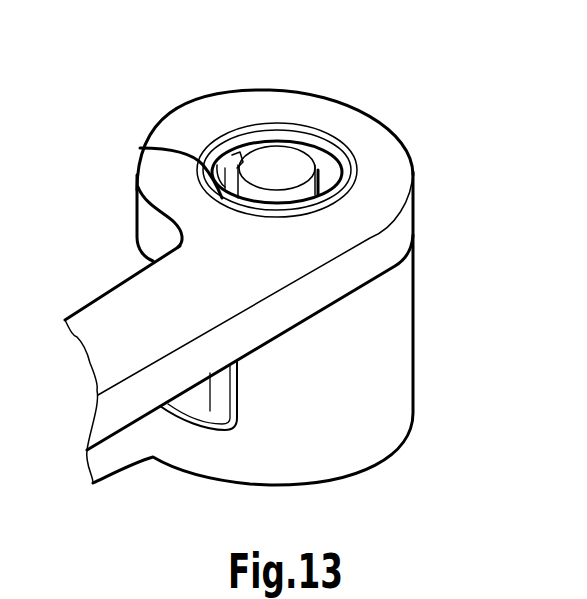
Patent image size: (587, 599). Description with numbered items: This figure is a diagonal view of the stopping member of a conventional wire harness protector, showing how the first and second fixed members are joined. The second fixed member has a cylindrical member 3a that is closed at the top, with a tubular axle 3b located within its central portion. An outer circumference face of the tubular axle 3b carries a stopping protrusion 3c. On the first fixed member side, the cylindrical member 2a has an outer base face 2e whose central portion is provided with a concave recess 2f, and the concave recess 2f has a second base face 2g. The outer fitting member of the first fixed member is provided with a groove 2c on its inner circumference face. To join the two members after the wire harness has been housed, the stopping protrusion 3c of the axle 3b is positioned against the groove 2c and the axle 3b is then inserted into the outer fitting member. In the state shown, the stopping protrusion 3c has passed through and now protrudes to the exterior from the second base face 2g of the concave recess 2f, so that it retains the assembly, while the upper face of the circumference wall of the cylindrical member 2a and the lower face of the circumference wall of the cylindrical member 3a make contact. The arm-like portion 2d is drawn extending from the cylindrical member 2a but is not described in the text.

The cylindrical member 2a is at (403, 228).
The groove 2c is at (143, 147).
The arm portion 2d is at (110, 293).
The outer base face 2e is at (397, 173).
The concave recess 2f is at (313, 147).
The second base face 2g is at (325, 167).
The cylindrical member 3a is at (405, 335).
The tubular axle 3b is at (278, 157).
The stopping protrusion 3c is at (238, 143).